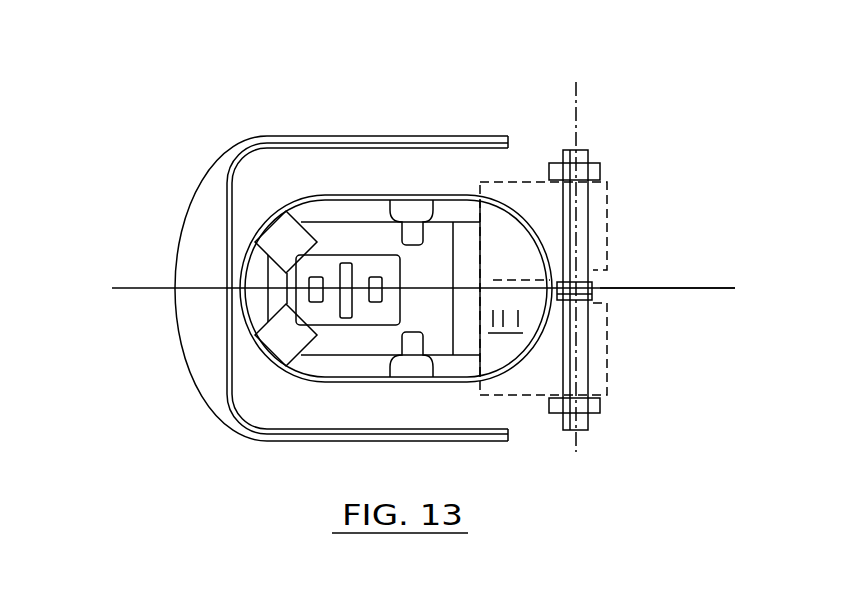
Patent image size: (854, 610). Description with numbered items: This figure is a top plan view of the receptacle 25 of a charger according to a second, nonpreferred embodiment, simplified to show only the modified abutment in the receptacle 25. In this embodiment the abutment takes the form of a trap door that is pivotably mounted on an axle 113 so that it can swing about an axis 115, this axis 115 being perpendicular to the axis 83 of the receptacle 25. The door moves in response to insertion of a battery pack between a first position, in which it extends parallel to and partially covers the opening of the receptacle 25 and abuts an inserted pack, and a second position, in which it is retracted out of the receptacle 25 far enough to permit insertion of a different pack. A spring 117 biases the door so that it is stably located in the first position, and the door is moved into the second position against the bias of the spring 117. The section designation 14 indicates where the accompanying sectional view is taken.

The section line 14- 14 is at (735, 262).
The receptacle 25 is at (351, 106).
The axis 83 is at (678, 288).
The axle 113 is at (586, 151).
The axis 115 is at (578, 103).
The spring 117 is at (598, 283).